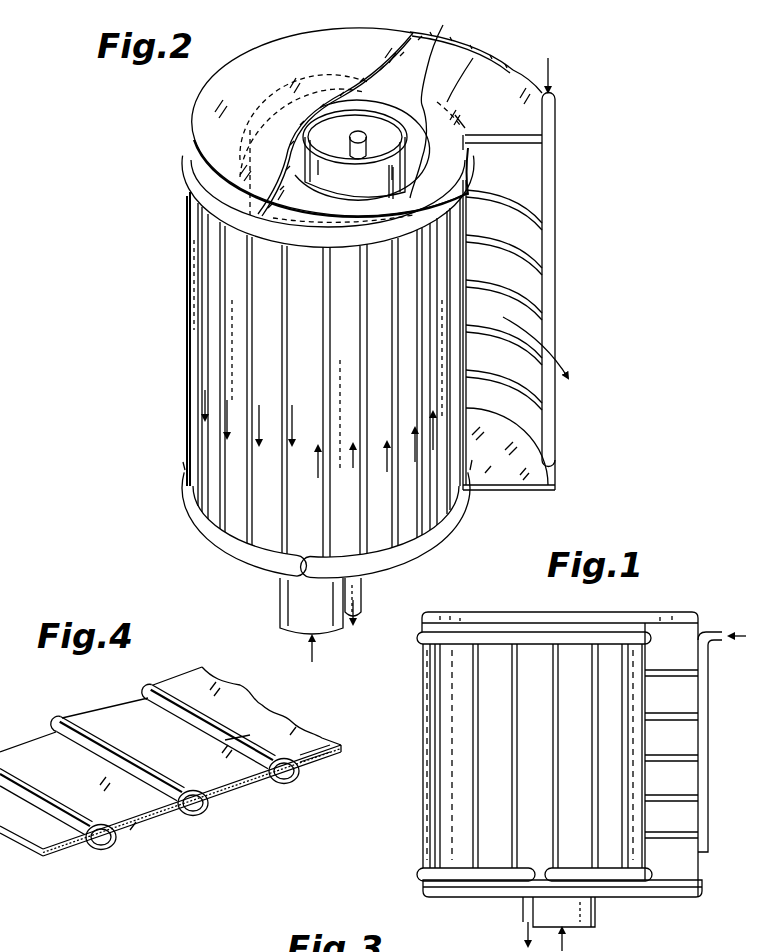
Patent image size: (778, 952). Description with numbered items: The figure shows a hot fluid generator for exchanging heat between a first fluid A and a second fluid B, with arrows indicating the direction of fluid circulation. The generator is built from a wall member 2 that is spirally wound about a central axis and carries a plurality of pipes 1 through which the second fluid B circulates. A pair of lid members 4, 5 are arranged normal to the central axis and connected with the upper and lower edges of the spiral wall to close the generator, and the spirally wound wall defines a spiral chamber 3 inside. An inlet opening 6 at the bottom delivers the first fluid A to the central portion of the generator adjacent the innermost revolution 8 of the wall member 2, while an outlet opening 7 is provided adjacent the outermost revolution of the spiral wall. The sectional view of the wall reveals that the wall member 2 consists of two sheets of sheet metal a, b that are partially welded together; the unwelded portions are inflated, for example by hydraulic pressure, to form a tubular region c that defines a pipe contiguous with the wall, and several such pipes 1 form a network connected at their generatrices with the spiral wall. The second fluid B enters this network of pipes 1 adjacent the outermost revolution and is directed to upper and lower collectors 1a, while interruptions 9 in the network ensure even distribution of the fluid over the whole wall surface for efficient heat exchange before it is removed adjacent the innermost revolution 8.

In FIG. 2, the pipes 1 is at (283, 383).
In FIG. 1, the pipes 1 is at (478, 736).
In FIG. 4, the pipes 1 is at (107, 849).
In FIG. 2, the upper and lower collectors 1a is at (187, 189).
In FIG. 2, the wall member 2 is at (479, 47).
In FIG. 1, the wall member 2 is at (432, 780).
In FIG. 4, the wall member 2 is at (125, 722).
In FIG. 2, the spiral chamber 3 is at (395, 100).
In FIG. 2, the lid member 4 is at (274, 58).
In FIG. 1, the lid member 4 is at (520, 616).
In FIG. 2, the lid member 5 is at (390, 563).
In FIG. 1, the lid member 5 is at (622, 886).
In FIG. 2, the inlet opening 6 is at (290, 606).
In FIG. 1, the inlet opening 6 is at (596, 913).
In FIG. 2, the outlet opening 7 is at (522, 286).
In FIG. 1, the outlet opening 7 is at (677, 702).
In FIG. 2, the innermost revolution 8 is at (320, 157).
In FIG. 2, the interruptions 9 is at (305, 553).
In FIG. 4, the sheet of sheet metal a is at (336, 744).
In FIG. 4, the sheet of sheet metal b is at (333, 760).
In FIG. 4, the tubular region c is at (237, 734).